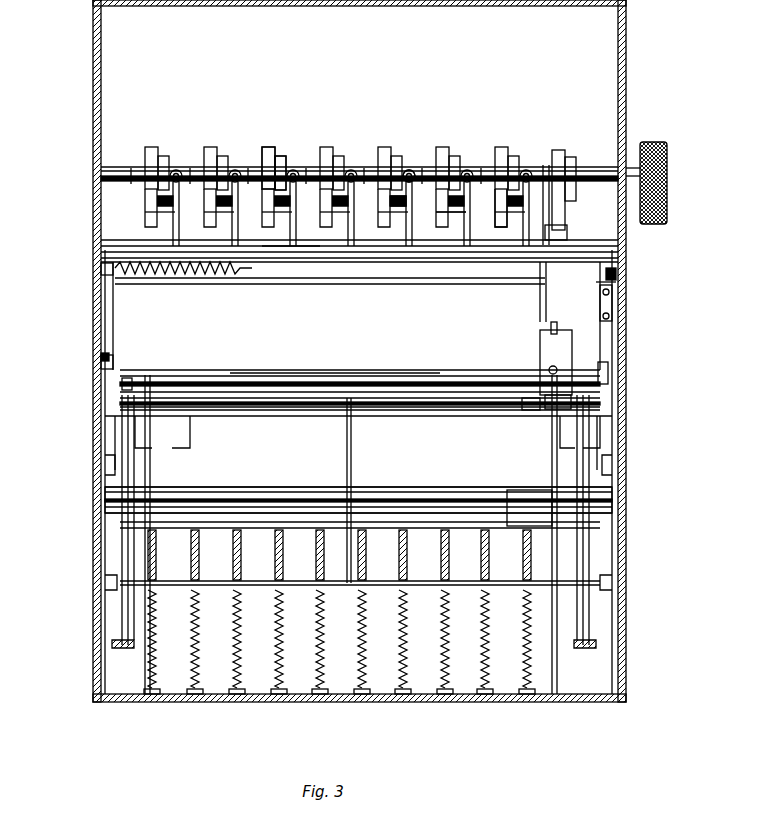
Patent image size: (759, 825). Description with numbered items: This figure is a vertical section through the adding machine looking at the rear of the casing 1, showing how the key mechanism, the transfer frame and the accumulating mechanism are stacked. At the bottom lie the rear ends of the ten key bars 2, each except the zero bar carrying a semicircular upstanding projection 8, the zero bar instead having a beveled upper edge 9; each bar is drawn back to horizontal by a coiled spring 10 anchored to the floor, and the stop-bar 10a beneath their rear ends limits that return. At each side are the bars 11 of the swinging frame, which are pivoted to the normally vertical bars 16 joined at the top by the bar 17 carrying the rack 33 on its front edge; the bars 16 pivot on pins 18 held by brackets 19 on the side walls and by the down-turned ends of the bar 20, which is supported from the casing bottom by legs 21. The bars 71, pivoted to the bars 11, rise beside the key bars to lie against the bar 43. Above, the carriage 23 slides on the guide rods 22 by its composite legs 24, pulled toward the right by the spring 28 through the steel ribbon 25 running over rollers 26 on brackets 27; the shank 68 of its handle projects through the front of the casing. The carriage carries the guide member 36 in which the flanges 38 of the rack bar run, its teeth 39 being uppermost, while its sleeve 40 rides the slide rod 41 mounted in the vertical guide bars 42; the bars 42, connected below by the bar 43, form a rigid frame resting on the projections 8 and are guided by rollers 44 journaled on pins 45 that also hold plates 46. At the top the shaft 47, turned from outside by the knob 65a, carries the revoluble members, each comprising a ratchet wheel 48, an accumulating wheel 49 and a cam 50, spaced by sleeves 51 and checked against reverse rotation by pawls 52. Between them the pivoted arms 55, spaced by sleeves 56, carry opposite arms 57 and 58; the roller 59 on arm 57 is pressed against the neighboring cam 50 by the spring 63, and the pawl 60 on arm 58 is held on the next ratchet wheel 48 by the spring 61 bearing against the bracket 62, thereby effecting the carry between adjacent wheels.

The casing 1 is at (143, 2).
The key bars 2 is at (276, 562).
The upstanding projection 8 is at (236, 542).
The beveled upper edge 9 is at (158, 546).
The coiled spring 10 is at (442, 658).
The stop-bar 10a is at (471, 588).
The bars 11 is at (116, 650).
The vertical bars 16 is at (100, 543).
The bar 17 is at (292, 370).
The pivot pins 18 is at (152, 445).
The brackets 19 is at (114, 426).
The bar 20 is at (446, 410).
The legs 21 is at (151, 473).
The guide rods 22 is at (150, 385).
The carriage 23 is at (542, 350).
The composite legs 24 is at (532, 410).
The flexible tape or ribbon 25 is at (366, 280).
The rollers 26 is at (614, 306).
The brackets 27 is at (600, 306).
The spring 28 is at (196, 282).
The rack of ratchet teeth 33 is at (360, 372).
The vertical guide member 36 is at (568, 243).
The laterally extending flanges 38 is at (565, 218).
The rack teeth 39 is at (546, 290).
The sleeve 40 is at (527, 501).
The slide rod 41 is at (400, 500).
The vertical guide bars 42 is at (100, 321).
The bar 43 is at (293, 521).
The rollers 44 is at (100, 270).
The pins 45 is at (600, 368).
The plate 46 is at (107, 356).
The shaft 47 is at (637, 180).
The ratchet wheel 48 is at (270, 150).
The accumulating wheel 49 is at (284, 162).
The cam 50 is at (258, 160).
The sleeves 51 is at (236, 162).
The pawl 52 is at (148, 218).
The upwardly extending arms 55 is at (300, 242).
The sleeves 56 is at (256, 252).
The arm 57 is at (478, 180).
The arm 58 is at (443, 180).
The roller 59 is at (432, 170).
The pawl 60 is at (433, 192).
The coiled spring 61 is at (497, 211).
The bracket 62 is at (437, 220).
The coiled spring 63 is at (403, 165).
The knob 65a is at (667, 200).
The shank 68 is at (550, 338).
The bars 71 is at (105, 561).